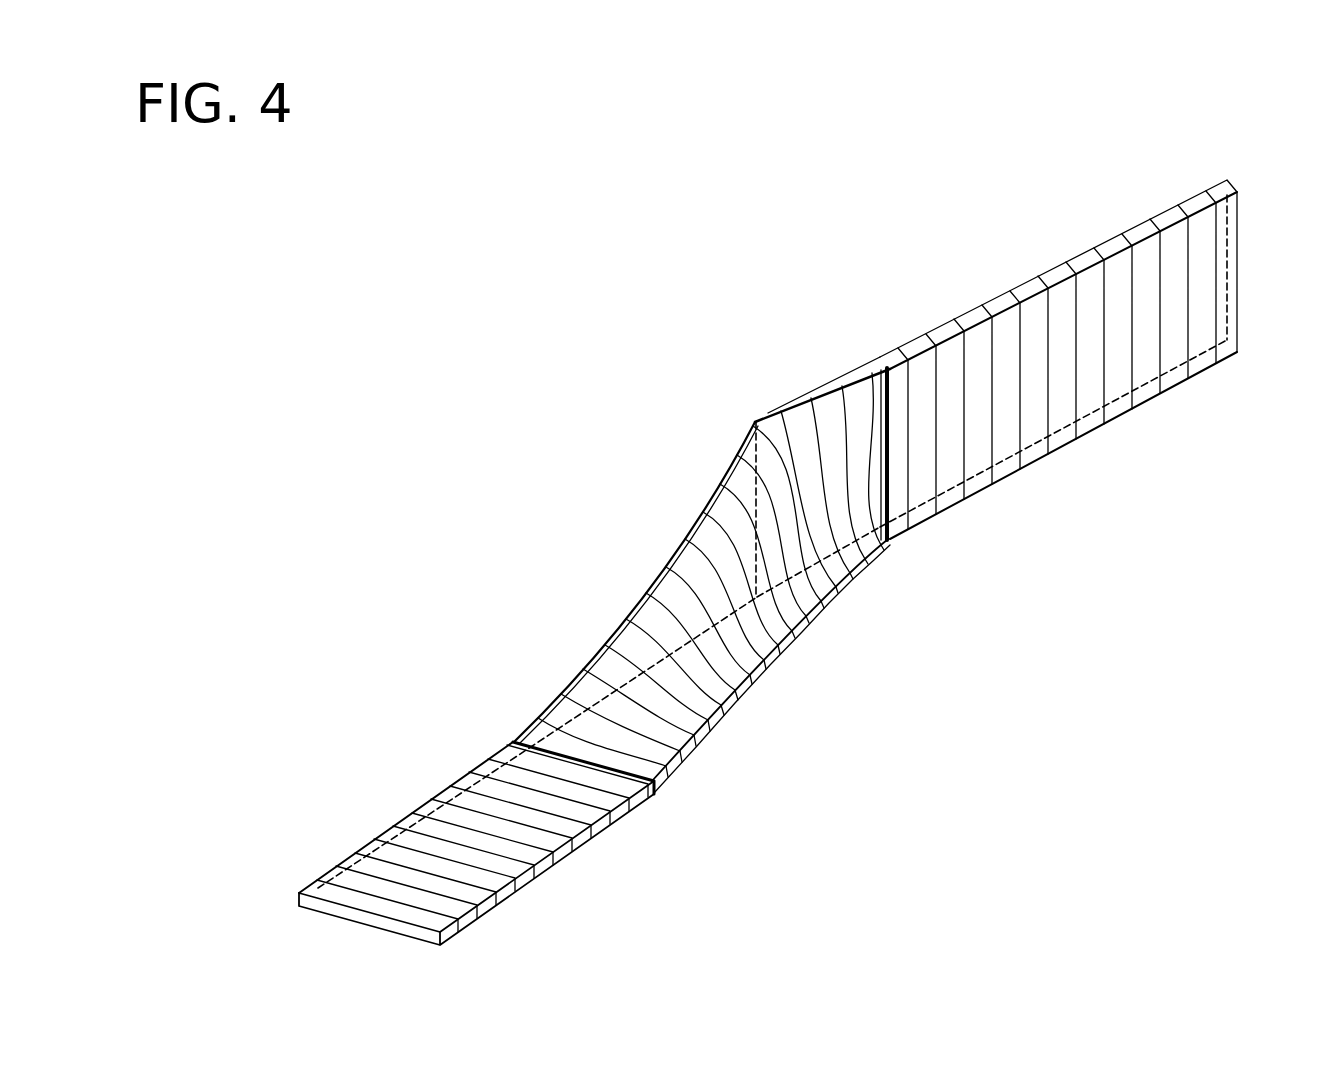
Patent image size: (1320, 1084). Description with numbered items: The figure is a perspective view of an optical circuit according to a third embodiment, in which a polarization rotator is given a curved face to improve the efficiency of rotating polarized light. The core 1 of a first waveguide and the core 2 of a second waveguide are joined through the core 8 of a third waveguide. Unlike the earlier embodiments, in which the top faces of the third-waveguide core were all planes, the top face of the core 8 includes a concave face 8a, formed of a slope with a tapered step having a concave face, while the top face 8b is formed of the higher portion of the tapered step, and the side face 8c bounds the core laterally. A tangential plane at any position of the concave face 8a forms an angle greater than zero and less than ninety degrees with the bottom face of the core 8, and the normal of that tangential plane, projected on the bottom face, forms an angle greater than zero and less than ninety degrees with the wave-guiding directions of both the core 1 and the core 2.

The core of first waveguide 1 is at (436, 797).
The core of second waveguide 2 is at (1067, 352).
The core of third waveguide 8 is at (645, 607).
The top face of third waveguide formed of slope with tapered step having concave fac 8a is at (739, 687).
The top face of core of third waveguide formed of higher portion of tapered step 8b is at (845, 378).
The side face of core of third waveguide 8c is at (878, 548).